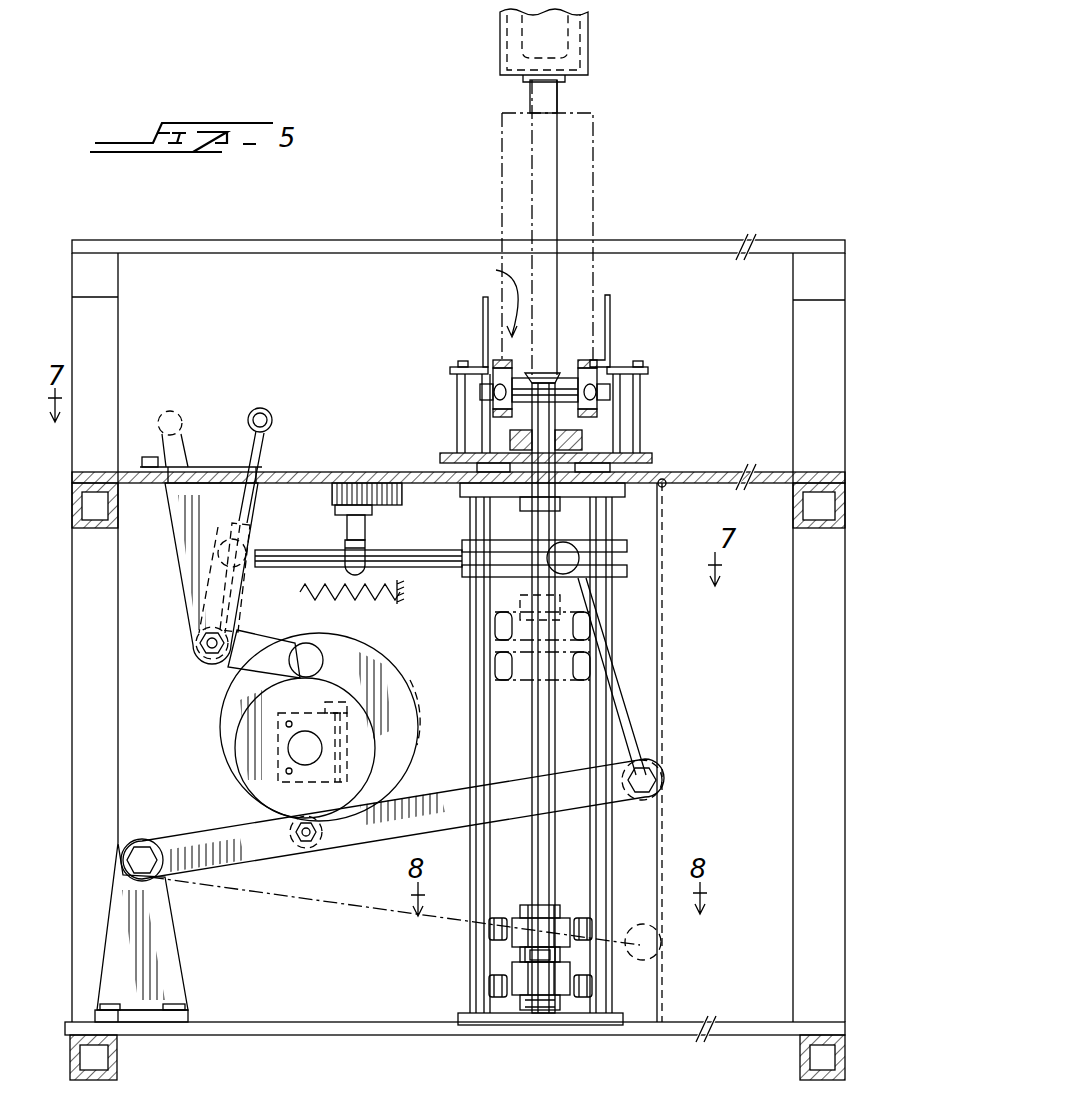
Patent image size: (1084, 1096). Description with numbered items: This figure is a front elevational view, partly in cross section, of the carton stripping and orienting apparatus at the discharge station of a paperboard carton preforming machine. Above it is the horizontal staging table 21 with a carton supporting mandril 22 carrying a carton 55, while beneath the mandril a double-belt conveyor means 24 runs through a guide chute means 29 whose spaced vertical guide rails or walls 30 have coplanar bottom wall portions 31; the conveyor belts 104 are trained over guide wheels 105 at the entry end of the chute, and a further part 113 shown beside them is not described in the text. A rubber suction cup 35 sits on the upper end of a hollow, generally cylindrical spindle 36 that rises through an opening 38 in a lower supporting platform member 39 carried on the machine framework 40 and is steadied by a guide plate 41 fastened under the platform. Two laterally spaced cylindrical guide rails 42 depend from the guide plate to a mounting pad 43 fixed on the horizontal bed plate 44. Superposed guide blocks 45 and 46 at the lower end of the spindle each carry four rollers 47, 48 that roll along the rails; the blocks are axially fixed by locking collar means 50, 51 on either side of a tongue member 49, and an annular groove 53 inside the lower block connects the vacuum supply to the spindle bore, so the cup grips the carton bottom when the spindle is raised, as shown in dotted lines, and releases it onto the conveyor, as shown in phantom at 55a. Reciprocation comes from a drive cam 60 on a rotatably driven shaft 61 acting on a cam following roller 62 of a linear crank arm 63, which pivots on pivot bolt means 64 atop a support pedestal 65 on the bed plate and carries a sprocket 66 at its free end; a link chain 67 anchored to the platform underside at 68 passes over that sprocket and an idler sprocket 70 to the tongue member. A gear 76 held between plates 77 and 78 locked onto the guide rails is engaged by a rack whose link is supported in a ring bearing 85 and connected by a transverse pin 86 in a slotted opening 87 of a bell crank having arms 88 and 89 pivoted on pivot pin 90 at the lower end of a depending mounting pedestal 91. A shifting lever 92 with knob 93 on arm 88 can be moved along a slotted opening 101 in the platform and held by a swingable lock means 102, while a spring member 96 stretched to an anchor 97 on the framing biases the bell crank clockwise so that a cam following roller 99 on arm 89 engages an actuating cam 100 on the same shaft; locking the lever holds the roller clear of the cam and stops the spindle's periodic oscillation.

The staging table 21 is at (690, 243).
The carton supporting mandril 22 is at (565, 12).
The double-belt conveyor means 24 is at (484, 295).
The guide chute means 29 is at (622, 305).
The guide rails or walls 30 is at (483, 312).
The bottom wall portions 31 is at (470, 372).
The rubber suction cup 35 is at (557, 345).
The spindle 36 is at (545, 752).
The opening 38 is at (560, 497).
The lower supporting platform member 39 is at (712, 466).
The machine framework 40 is at (852, 597).
The guide plate 41 is at (460, 494).
The guide rails 42 is at (485, 650).
The mounting pad 43 is at (615, 1020).
The bed plate 44 is at (710, 1026).
The upper guide block 45 is at (562, 918).
The lower guide block 46 is at (566, 975).
The rollers 47 is at (489, 929).
The rollers 48 is at (592, 928).
The tongue member 49 is at (520, 955).
The locking collar means 50 is at (520, 916).
The locking collar means 51 is at (518, 1025).
The annular chamber or groove 53 is at (568, 1030).
The carton 55 is at (588, 72).
The carton (phantom position) 55a is at (594, 182).
The drive cam 60 is at (436, 699).
The rotatably driven shaft means 61 is at (290, 748).
The cam following roller 62 is at (318, 840).
The linear crank arm 63 is at (405, 802).
The pivot bolt means 64 is at (142, 850).
The support pedestal 65 is at (178, 960).
The sprocket 66 is at (660, 779).
The link chain 67 is at (662, 650).
The anchor 68 is at (665, 487).
The intermediate idler sprocket 70 is at (580, 528).
The gear 76 is at (530, 560).
The plate 77 is at (580, 550).
The plate 78 is at (627, 578).
The ring bearing 85 is at (358, 556).
The transverse pin means 86 is at (240, 551).
The elongated slotted opening 87 is at (248, 525).
The bell crank arm 88 is at (200, 601).
The bell crank arm 89 is at (262, 660).
The pivot pin 90 is at (200, 646).
The depending mounting pedestal 91 is at (178, 542).
The shifting lever 92 is at (251, 457).
The knob means 93 is at (268, 398).
The spring member 96 is at (380, 592).
The anchor 97 is at (397, 588).
The cam following roller means 99 is at (312, 645).
The actuating cam 100 is at (412, 740).
The slotted opening 101 is at (212, 468).
The swingable lock means 102 is at (160, 432).
The belts 104 is at (493, 362).
The guide wheels 105 is at (597, 394).
The block 113 is at (582, 440).